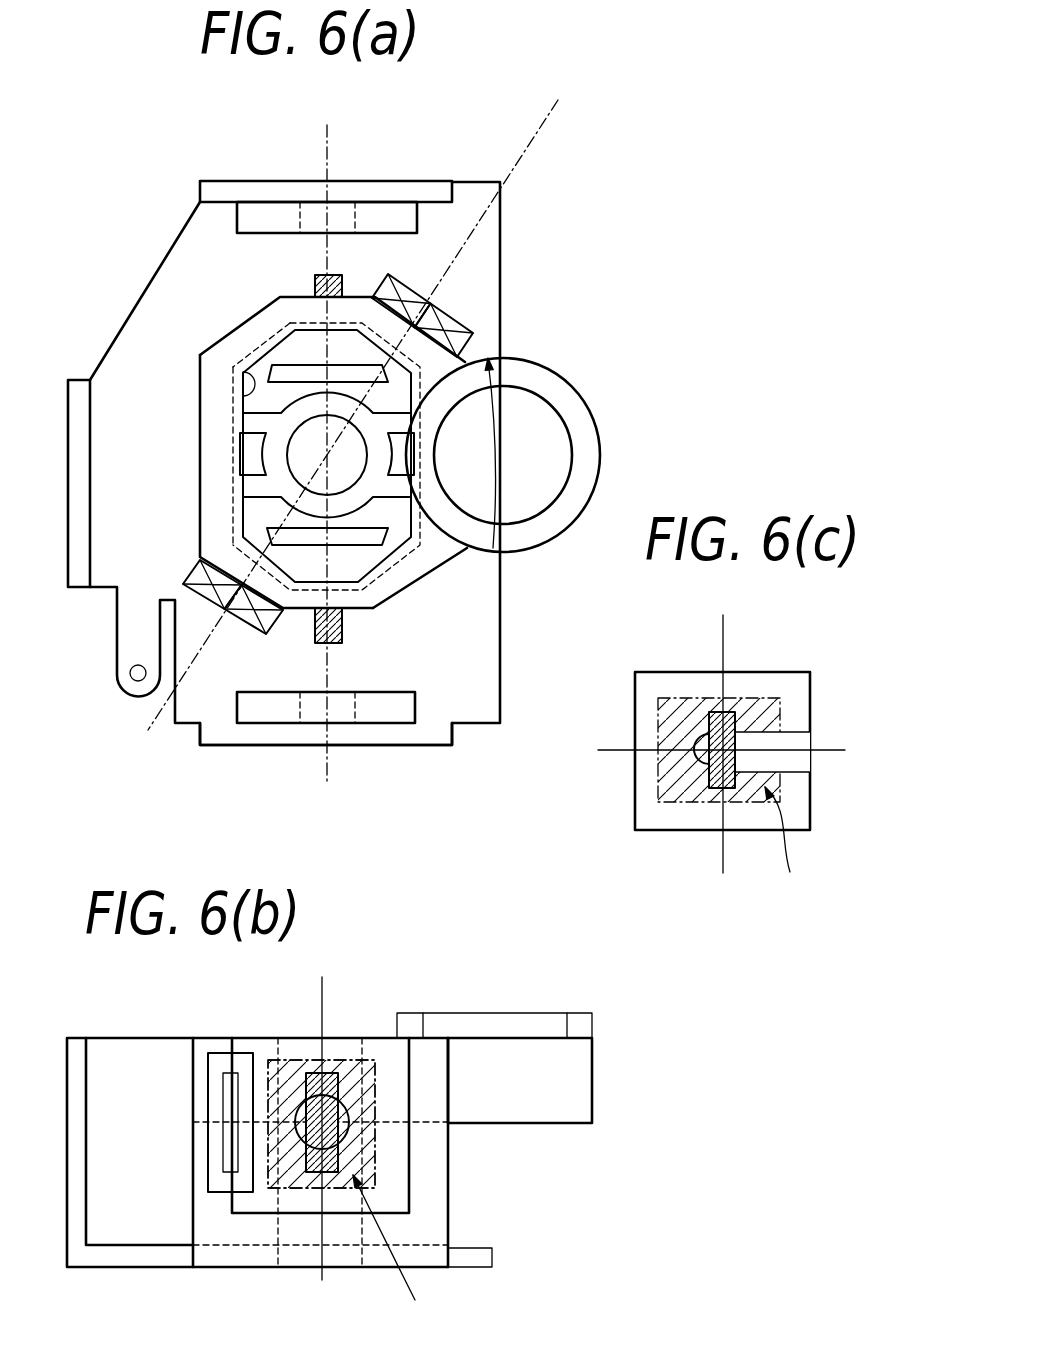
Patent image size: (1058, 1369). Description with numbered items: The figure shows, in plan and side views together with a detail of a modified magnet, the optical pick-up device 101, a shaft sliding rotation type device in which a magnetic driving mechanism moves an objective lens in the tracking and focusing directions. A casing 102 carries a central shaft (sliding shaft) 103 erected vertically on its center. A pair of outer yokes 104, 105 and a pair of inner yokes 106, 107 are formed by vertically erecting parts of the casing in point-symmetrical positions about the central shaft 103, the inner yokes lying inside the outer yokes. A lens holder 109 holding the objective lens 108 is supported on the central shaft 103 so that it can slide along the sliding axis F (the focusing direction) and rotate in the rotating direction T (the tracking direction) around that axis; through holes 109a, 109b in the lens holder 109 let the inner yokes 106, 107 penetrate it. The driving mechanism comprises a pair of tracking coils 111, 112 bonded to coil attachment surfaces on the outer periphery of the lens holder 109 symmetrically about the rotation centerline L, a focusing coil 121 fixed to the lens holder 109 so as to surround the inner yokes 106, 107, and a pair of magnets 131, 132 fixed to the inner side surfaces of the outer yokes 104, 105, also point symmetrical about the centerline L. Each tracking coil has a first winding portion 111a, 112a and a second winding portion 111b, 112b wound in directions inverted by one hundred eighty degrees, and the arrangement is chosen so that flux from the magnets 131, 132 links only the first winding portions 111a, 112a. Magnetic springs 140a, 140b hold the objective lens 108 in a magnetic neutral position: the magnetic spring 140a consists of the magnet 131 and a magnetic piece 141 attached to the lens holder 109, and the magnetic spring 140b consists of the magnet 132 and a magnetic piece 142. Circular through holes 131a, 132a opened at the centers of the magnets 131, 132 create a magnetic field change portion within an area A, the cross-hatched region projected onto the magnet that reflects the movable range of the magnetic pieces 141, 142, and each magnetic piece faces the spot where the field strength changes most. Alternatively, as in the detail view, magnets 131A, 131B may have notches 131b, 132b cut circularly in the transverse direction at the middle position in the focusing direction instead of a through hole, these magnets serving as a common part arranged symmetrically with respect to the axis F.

In FIG. 6A, the optical pick-up device 101 is at (645, 207).
In FIG. 6A, the casing 102 is at (490, 232).
In FIG. 6B, the casing 102 is at (465, 1270).
In FIG. 6A, the central shaft (sliding shaft) 103 is at (326, 468).
In FIG. 6B, the central shaft (sliding shaft) 103 is at (305, 1065).
In FIG. 6A, the outer yoke 104 is at (443, 738).
In FIG. 6B, the outer yoke 104 is at (448, 1225).
In FIG. 6A, the outer yoke 105 is at (394, 192).
In FIG. 6A, the inner yoke 106 is at (440, 553).
In FIG. 6A, the inner yoke 107 is at (295, 366).
In FIG. 6A, the objective lens 108 is at (558, 447).
In FIG. 6B, the objective lens 108 is at (525, 1018).
In FIG. 6A, the lens holder 109 is at (468, 563).
In FIG. 6B, the lens holder 109 is at (585, 1055).
In FIG. 6A, the through hole 109a is at (350, 567).
In FIG. 6A, the through hole 109b is at (233, 367).
In FIG. 6A, the tracking coil 111 is at (170, 669).
In FIG. 6A, the first winding portion 111a is at (254, 620).
In FIG. 6A, the second winding portion 111b is at (190, 572).
In FIG. 6A, the tracking coil 112 is at (482, 235).
In FIG. 6A, the first winding portion 112a is at (397, 293).
In FIG. 6A, the second winding portion 112b is at (443, 300).
In FIG. 6A, the focusing coil 121 is at (228, 486).
In FIG. 6A, the magnet 131 is at (315, 746).
In FIG. 6B, the magnet 131 is at (455, 1124).
In FIG. 6A, the circular through hole 131a is at (302, 700).
In FIG. 6B, the circular through hole 131a is at (271, 1193).
In FIG. 6C, the magnet 131A is at (761, 719).
In FIG. 6C, the magnet 131B is at (810, 700).
In FIG. 6C, the notch 131b is at (833, 778).
In FIG. 6A, the magnet 132 is at (327, 171).
In FIG. 6B, the magnet 132 is at (410, 1145).
In FIG. 6A, the circular through hole 132a is at (352, 205).
In FIG. 6B, the circular through hole 132a is at (282, 1140).
In FIG. 6C, the notch 132b is at (795, 762).
In FIG. 6A, the magnetic spring 140a is at (332, 734).
In FIG. 6A, the magnetic spring 140b is at (296, 185).
In FIG. 6A, the magnetic piece 141 is at (343, 623).
In FIG. 6C, the magnetic piece 141 is at (663, 807).
In FIG. 6B, the magnetic piece 141 is at (462, 1143).
In FIG. 6A, the magnetic piece 142 is at (312, 288).
In FIG. 6C, the magnetic piece 142 is at (710, 780).
In FIG. 6B, the magnetic piece 142 is at (338, 1160).
In FIG. 6A, the rotation centerline L is at (314, 455).
In FIG. 6A, the rotating direction T is at (502, 453).
In FIG. 6C, the sliding axis F is at (720, 645).
In FIG. 6B, the sliding axis F is at (325, 1005).
In FIG. 6C, the area A is at (784, 840).
In FIG. 6B, the area A is at (395, 1246).